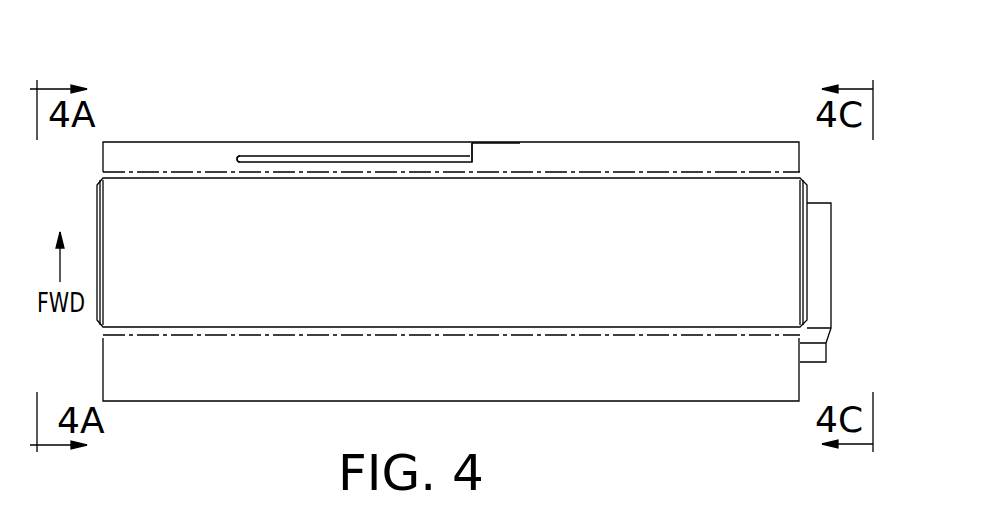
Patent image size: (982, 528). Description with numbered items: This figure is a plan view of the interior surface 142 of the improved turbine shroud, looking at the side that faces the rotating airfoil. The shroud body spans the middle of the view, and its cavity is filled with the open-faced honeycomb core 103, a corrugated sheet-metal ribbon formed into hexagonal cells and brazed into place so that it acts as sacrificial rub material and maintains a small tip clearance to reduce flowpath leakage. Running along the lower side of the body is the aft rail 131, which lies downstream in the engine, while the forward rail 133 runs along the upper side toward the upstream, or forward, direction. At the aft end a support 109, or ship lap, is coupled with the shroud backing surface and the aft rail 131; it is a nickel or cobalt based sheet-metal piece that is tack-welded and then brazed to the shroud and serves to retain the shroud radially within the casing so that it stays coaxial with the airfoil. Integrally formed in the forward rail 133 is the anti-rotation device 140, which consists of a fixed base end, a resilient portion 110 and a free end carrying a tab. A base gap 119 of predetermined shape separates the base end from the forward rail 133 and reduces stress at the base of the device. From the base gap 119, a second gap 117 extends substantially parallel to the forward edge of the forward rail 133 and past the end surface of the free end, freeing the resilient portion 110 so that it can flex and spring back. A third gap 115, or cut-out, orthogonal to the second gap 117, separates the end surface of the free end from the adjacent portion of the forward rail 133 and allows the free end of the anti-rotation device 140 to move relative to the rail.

The honeycomb core 103 is at (488, 257).
The support 109 is at (812, 298).
The resilient portion 110 is at (422, 100).
The third gap 115 is at (472, 148).
The second gap 117 is at (313, 158).
The base gap 119 is at (256, 158).
The aft rail 131 is at (139, 384).
The forward rail 133 is at (184, 155).
The anti-rotation device 140 is at (470, 130).
The interior surface 142 is at (612, 388).